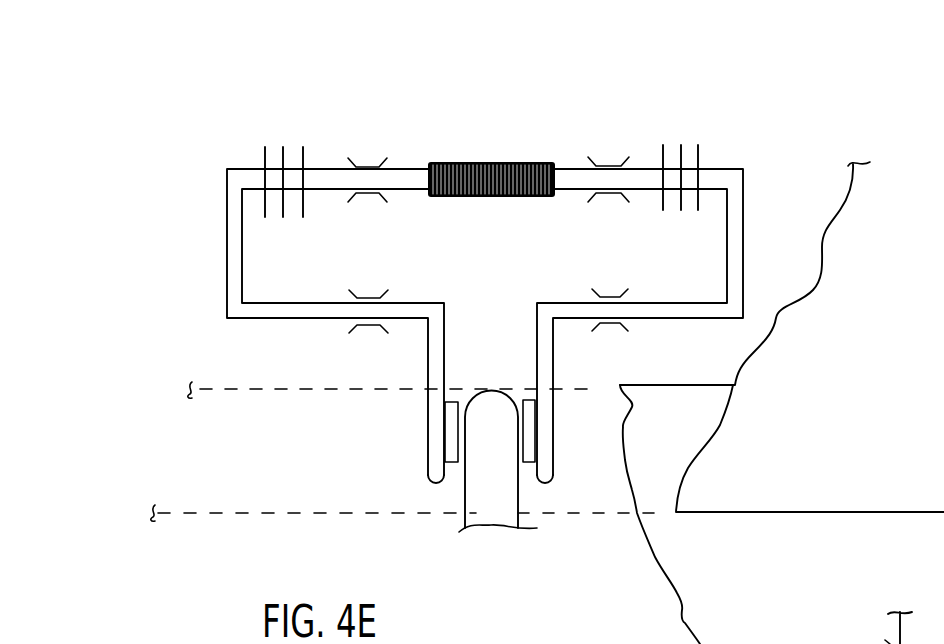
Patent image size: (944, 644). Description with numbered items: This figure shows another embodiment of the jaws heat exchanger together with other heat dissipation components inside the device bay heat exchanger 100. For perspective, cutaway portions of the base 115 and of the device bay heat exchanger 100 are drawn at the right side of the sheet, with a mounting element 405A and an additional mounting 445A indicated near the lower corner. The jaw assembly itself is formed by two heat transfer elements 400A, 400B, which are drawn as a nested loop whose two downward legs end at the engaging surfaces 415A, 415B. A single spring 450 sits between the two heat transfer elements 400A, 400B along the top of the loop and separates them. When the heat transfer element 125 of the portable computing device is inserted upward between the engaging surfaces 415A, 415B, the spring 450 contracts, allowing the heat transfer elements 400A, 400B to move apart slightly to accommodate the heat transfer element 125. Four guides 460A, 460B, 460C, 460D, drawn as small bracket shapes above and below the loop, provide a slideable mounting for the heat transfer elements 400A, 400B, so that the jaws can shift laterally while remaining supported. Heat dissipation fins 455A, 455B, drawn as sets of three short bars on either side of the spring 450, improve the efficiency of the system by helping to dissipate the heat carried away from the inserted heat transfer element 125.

The device bay heat exchanger 100 is at (860, 200).
The base 115 is at (680, 567).
The heat transfer element 125 is at (498, 462).
The heat transfer element 400A is at (218, 252).
The heat transfer element 400B is at (750, 233).
The mounting element 405A is at (885, 641).
The engaging surface 415A is at (455, 470).
The engaging surface 415B is at (527, 470).
The additional mounting 445A is at (916, 628).
The spring 450 is at (492, 152).
The heat dissipation fin 455A is at (288, 142).
The heat dissipation fin 455B is at (683, 123).
The guide 460A is at (367, 152).
The guide 460B is at (612, 153).
The guide 460C is at (367, 285).
The guide 460D is at (610, 282).